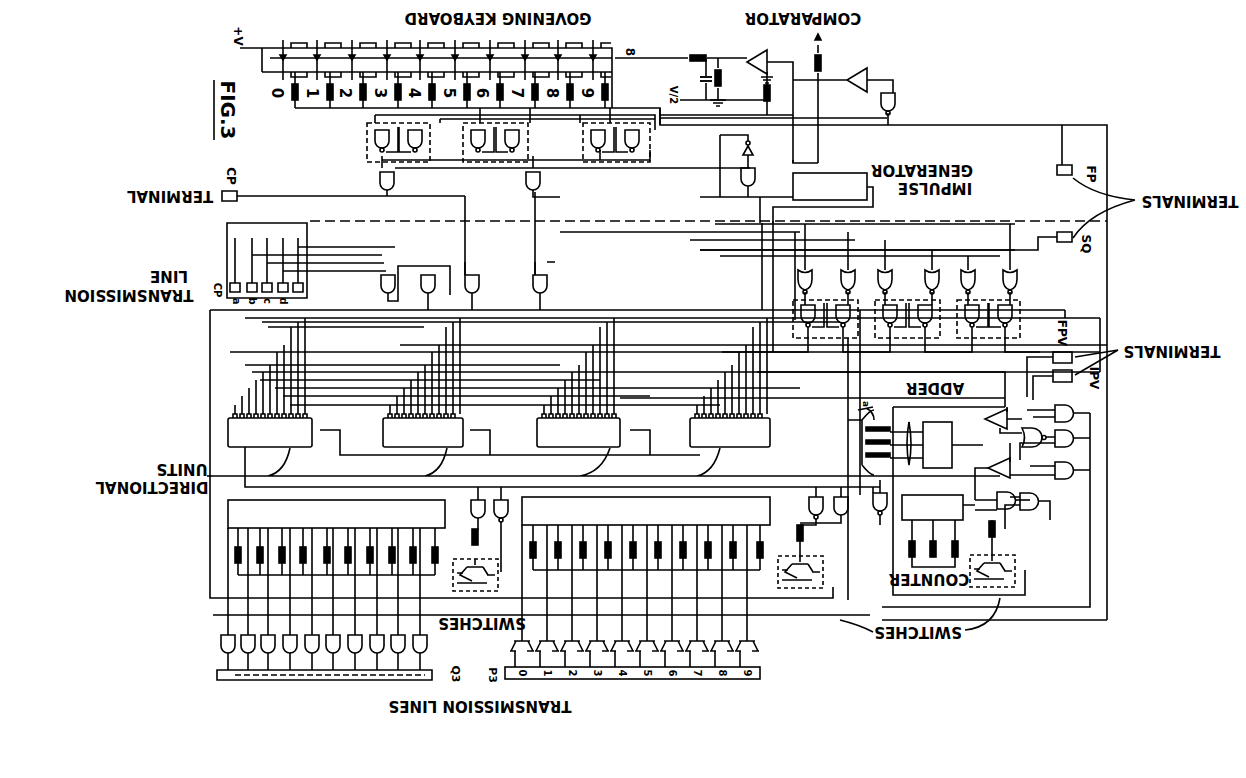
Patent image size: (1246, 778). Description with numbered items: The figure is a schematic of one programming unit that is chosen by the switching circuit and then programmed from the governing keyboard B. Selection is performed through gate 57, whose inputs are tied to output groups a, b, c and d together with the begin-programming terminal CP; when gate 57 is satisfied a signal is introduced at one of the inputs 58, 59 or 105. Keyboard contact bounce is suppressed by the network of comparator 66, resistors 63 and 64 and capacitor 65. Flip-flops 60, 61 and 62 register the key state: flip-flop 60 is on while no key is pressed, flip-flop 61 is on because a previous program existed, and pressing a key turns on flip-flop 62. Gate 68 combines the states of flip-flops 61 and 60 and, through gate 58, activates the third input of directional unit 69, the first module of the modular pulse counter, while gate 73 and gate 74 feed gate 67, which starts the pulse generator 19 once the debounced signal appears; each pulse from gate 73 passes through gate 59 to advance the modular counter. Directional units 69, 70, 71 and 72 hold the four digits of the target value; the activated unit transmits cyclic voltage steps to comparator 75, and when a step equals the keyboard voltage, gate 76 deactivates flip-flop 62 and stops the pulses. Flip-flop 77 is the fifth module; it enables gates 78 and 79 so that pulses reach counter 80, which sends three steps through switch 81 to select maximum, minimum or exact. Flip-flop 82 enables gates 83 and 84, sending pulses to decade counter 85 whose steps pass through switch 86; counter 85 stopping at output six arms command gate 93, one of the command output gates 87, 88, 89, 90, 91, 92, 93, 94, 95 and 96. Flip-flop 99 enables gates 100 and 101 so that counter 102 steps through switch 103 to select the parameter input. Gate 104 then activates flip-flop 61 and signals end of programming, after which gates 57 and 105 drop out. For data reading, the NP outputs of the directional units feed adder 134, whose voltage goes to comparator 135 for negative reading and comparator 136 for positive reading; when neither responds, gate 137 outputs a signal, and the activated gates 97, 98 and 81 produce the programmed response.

The impulse generator 19 is at (816, 198).
The gate 57 is at (380, 284).
The gate 58 is at (478, 285).
The gate 59 is at (535, 286).
The flip-flop 60 is at (370, 155).
The flip-flop 61 is at (468, 155).
The flip-flop 62 is at (586, 155).
The resistor 63 is at (688, 58).
The resistor 64 is at (721, 80).
The capacitor 65 is at (700, 78).
The comparator 66 is at (767, 62).
The gate 67 is at (743, 182).
The gate 68 is at (380, 182).
The directional unit 69 is at (270, 382).
The directional unit 70 is at (423, 382).
The directional unit 71 is at (578, 382).
The directional unit 72 is at (730, 382).
The gate 73 is at (542, 185).
The gate 74 is at (753, 145).
The comparator 75 is at (866, 70).
The gate 76 is at (892, 104).
The flip-flop 77 is at (831, 304).
The gate 78 is at (1003, 499).
The gate 79 is at (1035, 508).
The counter 80 is at (932, 507).
The switch 81 is at (1070, 475).
The flip-flop 82 is at (913, 304).
The gate 83 is at (472, 500).
The gate 84 is at (501, 522).
The counter 85 is at (336, 514).
The switch 86 is at (475, 567).
The AND gate 87 is at (223, 653).
The AND gate 88 is at (247, 654).
The AND gate 89 is at (268, 654).
The AND gate 90 is at (290, 654).
The AND gate 91 is at (312, 654).
The AND gate 92 is at (333, 654).
The gate 93 is at (355, 654).
The AND gate 94 is at (377, 654).
The AND gate 95 is at (398, 654).
The AND gate 96 is at (429, 652).
The gate 97 is at (1060, 405).
The gate 98 is at (1072, 430).
The flip-flop 99 is at (995, 304).
The gate 100 is at (806, 514).
The gate 101 is at (839, 520).
The counter 102 is at (646, 511).
The switch 103 is at (823, 575).
The gate 104 is at (876, 507).
The gate 105 is at (425, 275).
The adder 134 is at (936, 445).
The comparator 135 is at (1003, 428).
The comparator 136 is at (1019, 480).
The gate 137 is at (1030, 427).